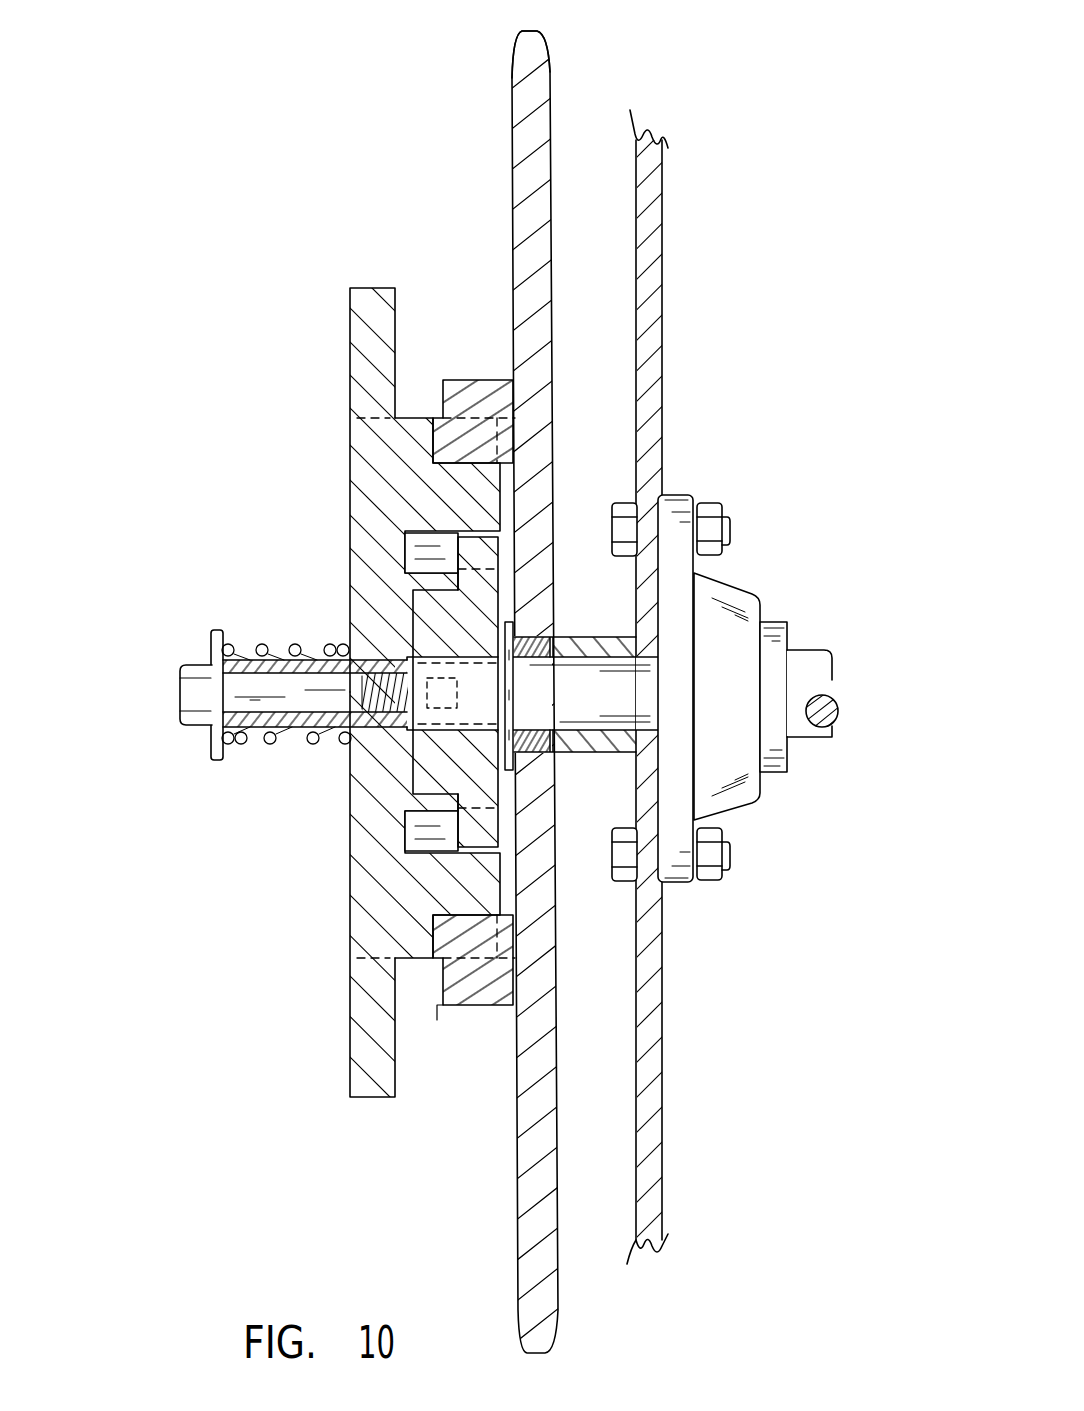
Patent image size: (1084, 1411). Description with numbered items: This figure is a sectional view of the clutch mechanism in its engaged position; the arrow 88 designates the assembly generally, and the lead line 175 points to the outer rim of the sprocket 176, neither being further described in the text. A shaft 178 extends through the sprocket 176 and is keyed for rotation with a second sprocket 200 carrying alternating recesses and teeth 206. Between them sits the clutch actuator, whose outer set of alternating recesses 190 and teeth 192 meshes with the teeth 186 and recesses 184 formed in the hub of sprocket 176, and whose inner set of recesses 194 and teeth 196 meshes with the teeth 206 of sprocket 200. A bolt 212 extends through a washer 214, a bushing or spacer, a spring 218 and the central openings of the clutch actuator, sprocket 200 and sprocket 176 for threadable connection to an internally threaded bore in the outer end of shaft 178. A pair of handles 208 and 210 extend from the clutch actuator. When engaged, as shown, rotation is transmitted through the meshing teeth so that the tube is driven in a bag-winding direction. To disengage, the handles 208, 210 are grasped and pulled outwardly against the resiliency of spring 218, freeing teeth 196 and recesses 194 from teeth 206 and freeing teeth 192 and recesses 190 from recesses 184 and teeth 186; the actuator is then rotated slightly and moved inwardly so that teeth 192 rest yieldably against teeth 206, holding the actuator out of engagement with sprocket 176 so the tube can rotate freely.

The blade drive assembly 88 is at (318, 950).
The blade periphery 175 is at (528, 29).
The sprocket 176 is at (528, 1180).
The shaft 178 is at (800, 655).
The recesses 184 is at (450, 380).
The teeth 186 is at (443, 987).
The recesses 190 is at (430, 451).
The teeth 192 is at (477, 500).
The recesses 194 is at (410, 567).
The teeth 196 is at (465, 882).
The sprocket 200 is at (480, 610).
The teeth 206 is at (482, 548).
The handle 208 is at (372, 312).
The handle 210 is at (367, 1078).
The bolt 212 is at (200, 698).
The washer 214 is at (210, 745).
The spring 218 is at (270, 738).